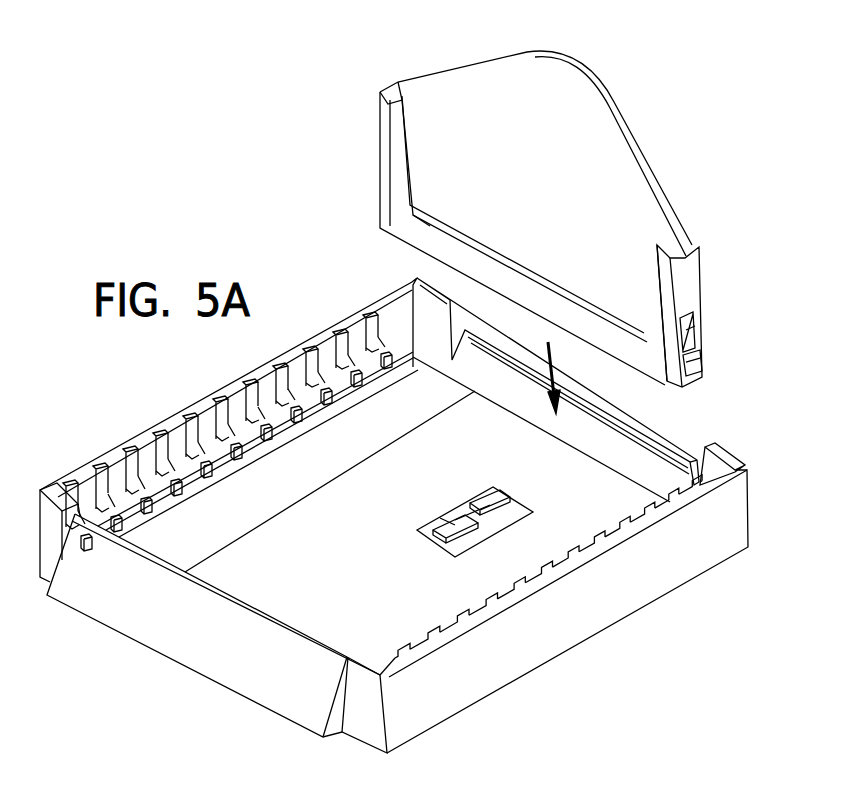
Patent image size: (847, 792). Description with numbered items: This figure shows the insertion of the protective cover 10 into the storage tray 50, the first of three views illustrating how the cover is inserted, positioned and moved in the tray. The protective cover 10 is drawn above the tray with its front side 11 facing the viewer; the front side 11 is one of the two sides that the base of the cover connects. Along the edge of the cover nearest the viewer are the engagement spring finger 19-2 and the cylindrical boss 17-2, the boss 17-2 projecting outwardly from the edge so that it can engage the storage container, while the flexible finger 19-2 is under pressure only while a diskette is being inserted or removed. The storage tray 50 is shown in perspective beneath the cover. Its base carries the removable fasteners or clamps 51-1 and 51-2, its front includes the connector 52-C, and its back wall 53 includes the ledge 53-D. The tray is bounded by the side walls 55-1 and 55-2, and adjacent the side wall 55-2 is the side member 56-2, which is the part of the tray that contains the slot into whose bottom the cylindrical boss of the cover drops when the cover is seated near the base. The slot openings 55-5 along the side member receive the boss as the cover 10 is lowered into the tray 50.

The protective cover 10 is at (466, 62).
The front side 11 is at (527, 292).
The engagement spring finger 19-2 is at (692, 337).
The cylindrical boss 17-2 is at (700, 367).
The storage tray 50 is at (222, 367).
The side wall 55-2 is at (140, 433).
The contact slots 55-5 is at (310, 343).
The side member 56-2 is at (273, 402).
The connector 52-C is at (280, 650).
The side wall 55-1 is at (577, 617).
The back wall 53 is at (628, 458).
The ledge 53-D is at (632, 413).
The removable fastener or clamp 51-1 is at (433, 546).
The removable fastener or clamp 51-2 is at (506, 500).